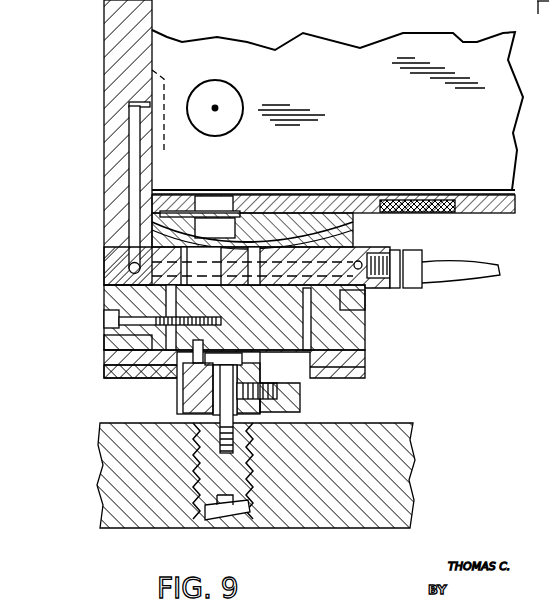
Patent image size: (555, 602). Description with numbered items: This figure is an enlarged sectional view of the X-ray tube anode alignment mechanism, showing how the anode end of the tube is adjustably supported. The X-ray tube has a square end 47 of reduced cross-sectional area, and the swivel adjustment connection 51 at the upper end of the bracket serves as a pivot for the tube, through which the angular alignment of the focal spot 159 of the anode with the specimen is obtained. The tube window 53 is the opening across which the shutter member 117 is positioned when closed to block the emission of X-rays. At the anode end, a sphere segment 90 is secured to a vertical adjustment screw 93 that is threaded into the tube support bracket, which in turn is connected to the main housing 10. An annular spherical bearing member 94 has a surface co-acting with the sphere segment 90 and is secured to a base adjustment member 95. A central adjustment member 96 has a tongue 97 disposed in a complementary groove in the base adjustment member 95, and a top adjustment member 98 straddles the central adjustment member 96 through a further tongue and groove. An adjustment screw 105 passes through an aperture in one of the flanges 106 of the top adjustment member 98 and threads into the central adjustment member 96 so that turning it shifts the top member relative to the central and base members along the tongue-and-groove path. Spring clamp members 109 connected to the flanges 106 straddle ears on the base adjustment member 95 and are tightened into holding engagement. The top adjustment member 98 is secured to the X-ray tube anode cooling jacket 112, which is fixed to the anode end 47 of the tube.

The main housing 10 is at (366, 374).
The square end of the X-ray tube 47 is at (436, 48).
The swivel adjustment connection 51 is at (365, 348).
The tube window 53 is at (243, 100).
The sphere segment 90 is at (185, 403).
The vertical adjustment screw 93 is at (228, 520).
The annular spherical bearing member 94 is at (190, 385).
The base adjustment member 95 is at (300, 404).
The central adjustment member 96 is at (340, 322).
The tongue 97 is at (300, 340).
The top adjustment member 98 is at (118, 292).
The adjustment screw 105 is at (104, 319).
The flanges of the top adjustment member 106 is at (115, 345).
The spring clamp members 109 is at (110, 373).
The X-ray tube anode cooling jacket 112 is at (110, 82).
The shutter member 117 is at (403, 212).
The focal spot 159 is at (215, 108).